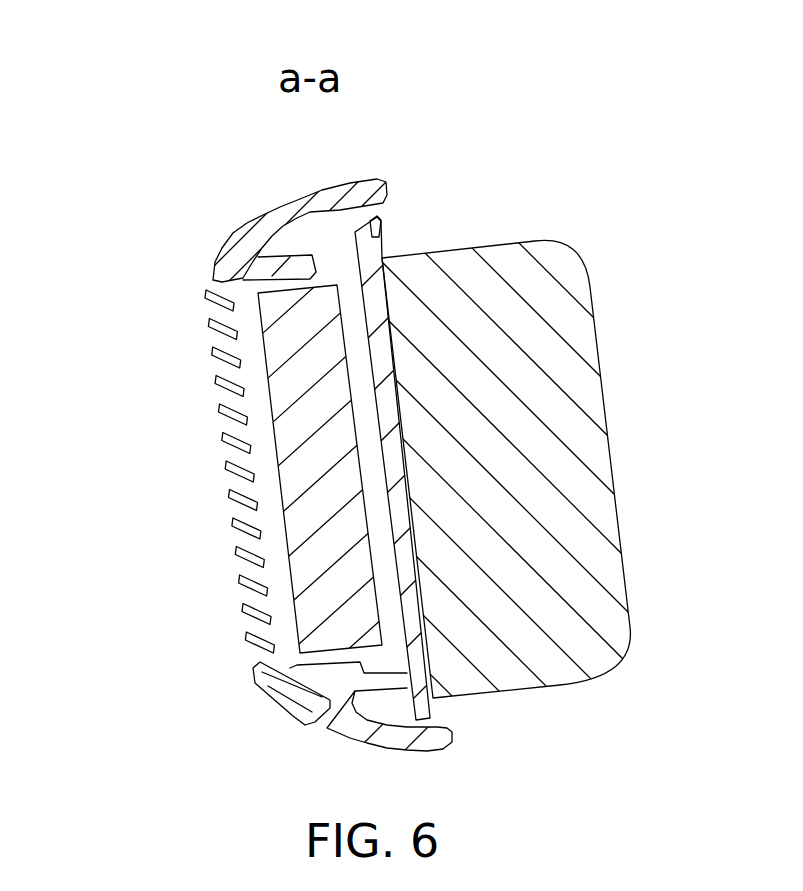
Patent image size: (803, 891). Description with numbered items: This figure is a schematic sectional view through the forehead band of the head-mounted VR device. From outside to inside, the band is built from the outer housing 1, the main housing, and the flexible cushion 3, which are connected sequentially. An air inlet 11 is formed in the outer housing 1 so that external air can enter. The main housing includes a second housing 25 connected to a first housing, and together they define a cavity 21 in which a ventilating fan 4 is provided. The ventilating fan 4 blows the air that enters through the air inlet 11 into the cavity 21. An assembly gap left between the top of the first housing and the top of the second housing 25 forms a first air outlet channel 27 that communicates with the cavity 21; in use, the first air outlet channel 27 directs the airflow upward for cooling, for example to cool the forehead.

The outer housing 1 is at (293, 700).
The flexible cushion 3 is at (535, 550).
The ventilating fan 4 is at (320, 568).
The air inlet 11 is at (208, 398).
The cavity 21 is at (353, 303).
The second housing 25 is at (386, 425).
The first air outlet channel 27 is at (365, 213).